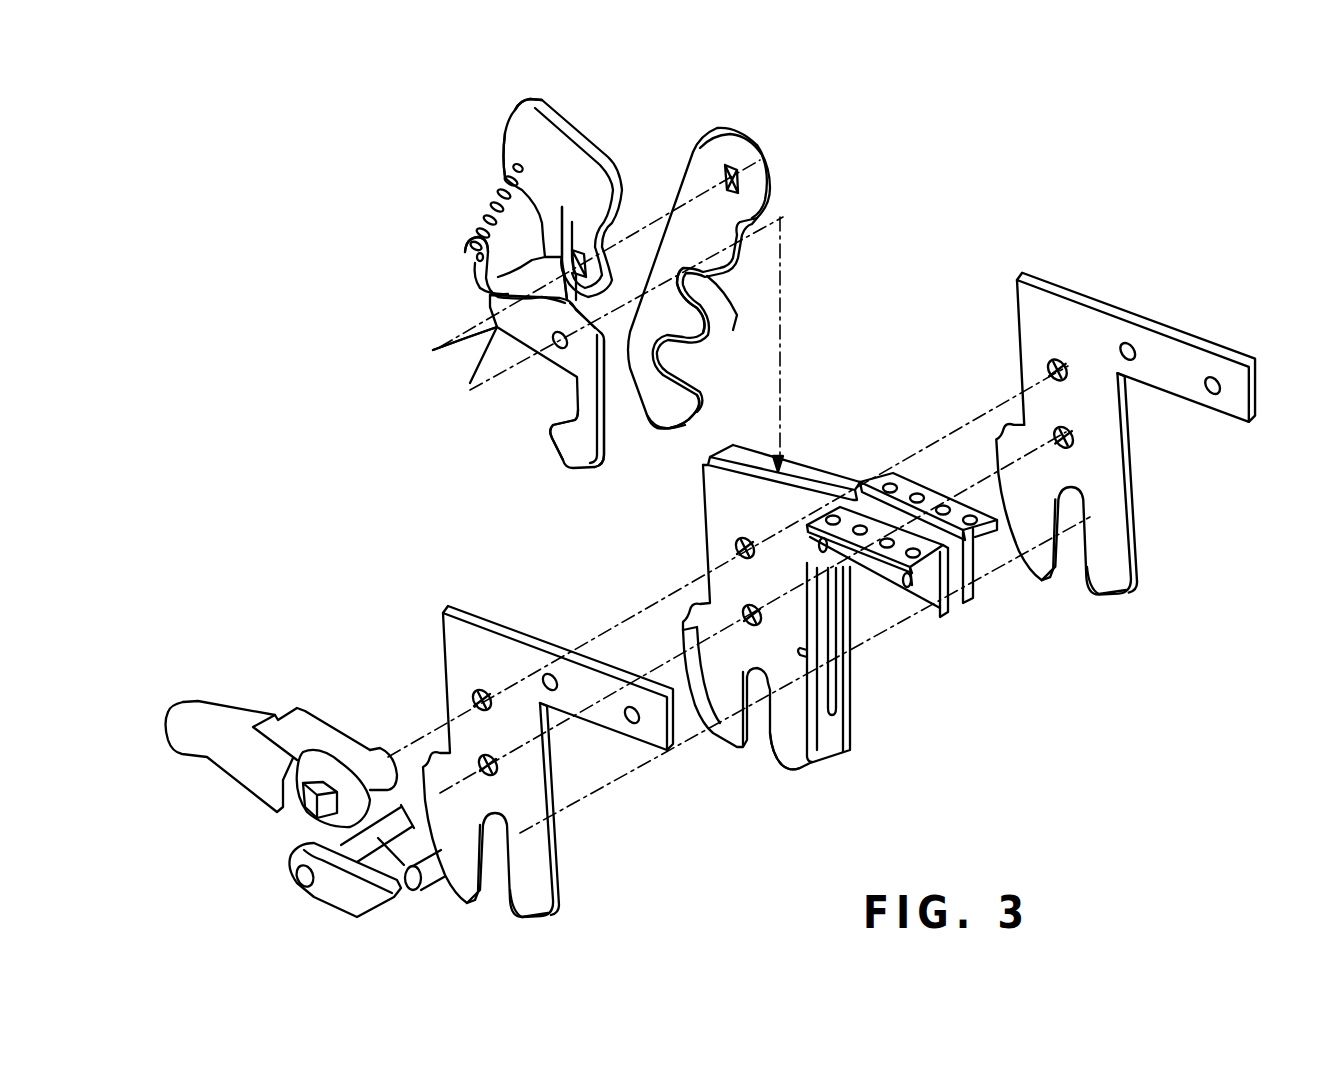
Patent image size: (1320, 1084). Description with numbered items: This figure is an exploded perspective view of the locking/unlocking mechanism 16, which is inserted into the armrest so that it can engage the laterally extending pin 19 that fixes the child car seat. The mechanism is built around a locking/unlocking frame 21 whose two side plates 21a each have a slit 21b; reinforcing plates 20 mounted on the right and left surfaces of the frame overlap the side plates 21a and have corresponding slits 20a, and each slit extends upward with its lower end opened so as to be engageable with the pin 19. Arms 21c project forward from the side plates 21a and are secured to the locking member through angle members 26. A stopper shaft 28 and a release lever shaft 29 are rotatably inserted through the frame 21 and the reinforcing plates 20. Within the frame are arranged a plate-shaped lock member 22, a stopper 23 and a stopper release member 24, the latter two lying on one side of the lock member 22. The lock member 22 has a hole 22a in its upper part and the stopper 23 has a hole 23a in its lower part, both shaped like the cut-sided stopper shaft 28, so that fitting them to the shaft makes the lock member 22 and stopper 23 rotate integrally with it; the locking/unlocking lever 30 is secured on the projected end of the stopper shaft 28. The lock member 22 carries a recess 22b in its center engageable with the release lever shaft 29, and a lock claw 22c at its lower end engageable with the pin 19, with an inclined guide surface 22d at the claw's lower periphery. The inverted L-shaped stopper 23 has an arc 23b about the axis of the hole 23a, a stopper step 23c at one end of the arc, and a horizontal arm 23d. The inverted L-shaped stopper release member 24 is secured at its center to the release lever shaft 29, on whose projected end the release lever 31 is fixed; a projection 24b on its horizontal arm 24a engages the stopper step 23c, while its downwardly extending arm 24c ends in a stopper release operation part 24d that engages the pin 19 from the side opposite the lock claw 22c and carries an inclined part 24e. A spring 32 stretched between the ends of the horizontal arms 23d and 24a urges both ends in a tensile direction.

The locking/unlocking mechanism 16 is at (896, 272).
The pin 19 is at (592, 806).
The reinforcing plate 20 is at (480, 647).
The slit 20a is at (503, 878).
The locking/unlocking frame 21 is at (703, 547).
The side plate 21a is at (782, 460).
The slit 21b is at (764, 760).
The arm 21c is at (975, 600).
The lock member 22 is at (728, 152).
The hole 22a is at (742, 183).
The recess 22b is at (718, 292).
The lock claw 22c is at (657, 428).
The guide surface 22d is at (697, 418).
The stopper 23 is at (553, 170).
The hole 23a is at (592, 250).
The arc 23b is at (490, 294).
The stopper step 23c is at (488, 236).
The horizontal arm 23d is at (503, 125).
The stopper release member 24 is at (430, 350).
The horizontal arm 24a is at (523, 340).
The projection 24b is at (560, 240).
The downwardly extending arm 24c is at (575, 470).
The stopper release operation part 24d is at (563, 455).
The inclined part 24e is at (553, 418).
The angle member 26 is at (900, 485).
The stopper shaft 28 is at (372, 757).
The release lever shaft 29 is at (415, 892).
The locking/unlocking lever 30 is at (233, 713).
The release lever 31 is at (345, 892).
The spring 32 is at (480, 200).